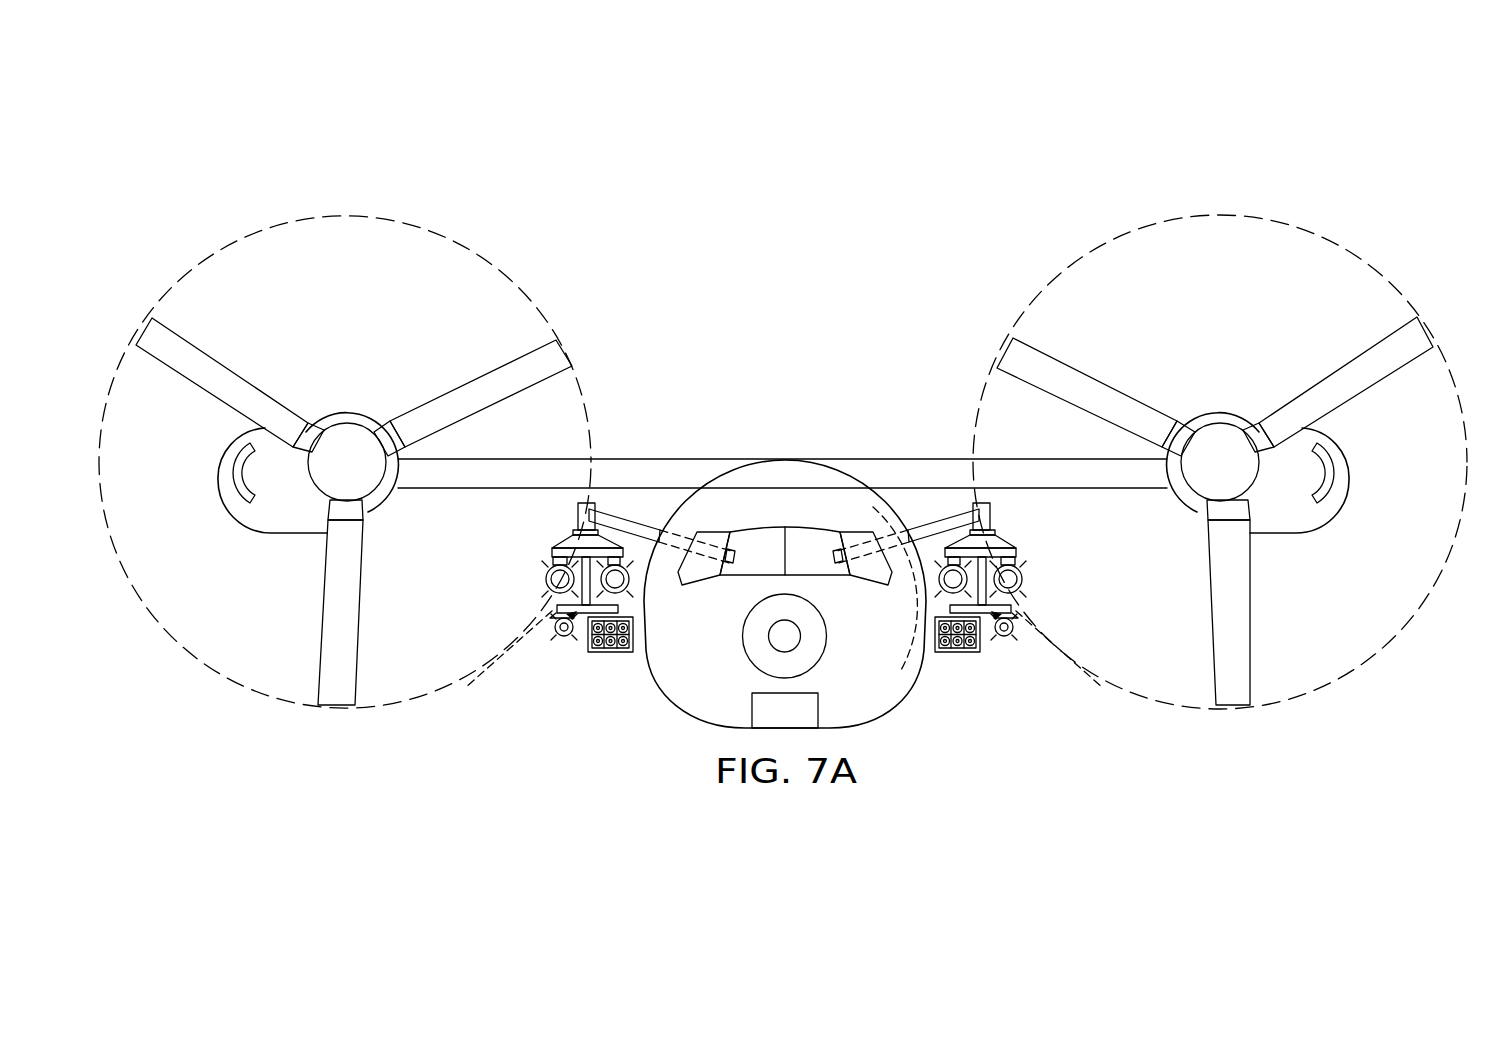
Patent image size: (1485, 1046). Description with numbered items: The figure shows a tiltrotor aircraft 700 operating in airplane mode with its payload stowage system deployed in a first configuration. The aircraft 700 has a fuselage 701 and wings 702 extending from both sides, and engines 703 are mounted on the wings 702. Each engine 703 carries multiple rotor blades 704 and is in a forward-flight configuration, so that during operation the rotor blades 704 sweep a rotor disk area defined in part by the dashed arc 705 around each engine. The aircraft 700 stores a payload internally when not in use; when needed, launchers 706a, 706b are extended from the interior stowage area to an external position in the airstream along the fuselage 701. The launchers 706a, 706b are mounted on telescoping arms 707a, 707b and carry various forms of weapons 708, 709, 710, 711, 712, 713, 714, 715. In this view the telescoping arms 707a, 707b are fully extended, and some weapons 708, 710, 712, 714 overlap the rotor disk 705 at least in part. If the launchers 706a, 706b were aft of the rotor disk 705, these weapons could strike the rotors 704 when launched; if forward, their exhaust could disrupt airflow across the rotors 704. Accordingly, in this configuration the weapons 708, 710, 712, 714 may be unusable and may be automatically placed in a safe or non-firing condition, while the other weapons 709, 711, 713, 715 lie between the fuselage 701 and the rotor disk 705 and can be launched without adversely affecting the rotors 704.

The aircraft 700 is at (595, 202).
The fuselage 701 is at (885, 713).
The wings 702 is at (569, 459).
The engines 703 is at (281, 522).
The rotor blades 704 is at (241, 380).
The arc 705 is at (282, 219).
The launcher 706a is at (535, 543).
The launcher 706b is at (1035, 543).
The telescoping arm 707a is at (597, 505).
The telescoping arm 707b is at (973, 505).
The weapon 708 is at (546, 578).
The weapon 709 is at (629, 580).
The weapon 710 is at (564, 639).
The weapon 711 is at (615, 653).
The weapon 712 is at (1024, 578).
The weapon 713 is at (939, 580).
The weapon 714 is at (1004, 639).
The weapon 715 is at (953, 653).